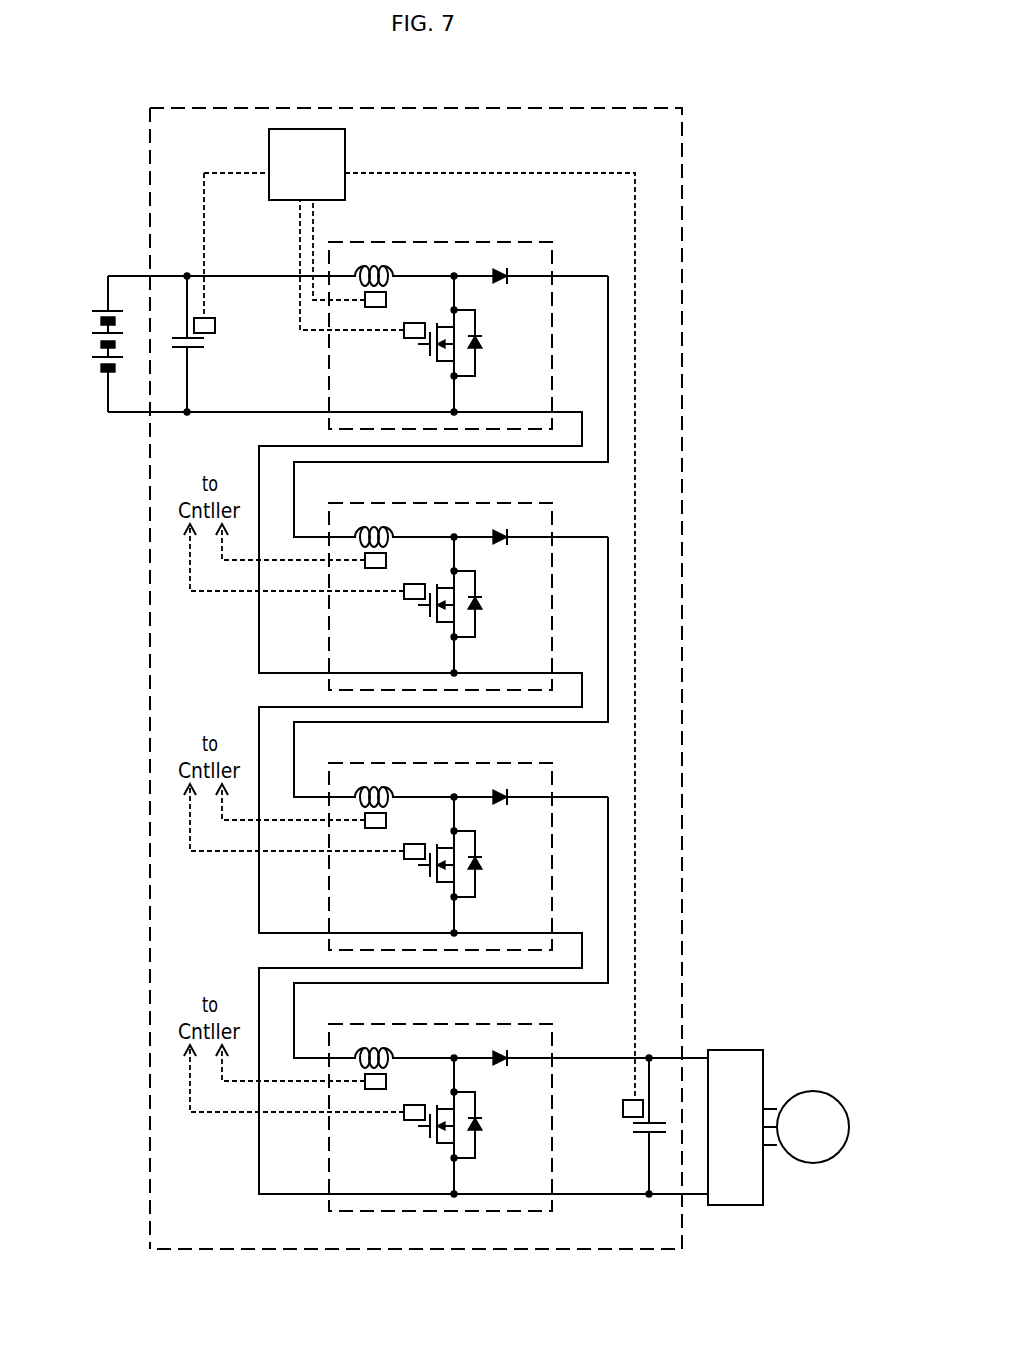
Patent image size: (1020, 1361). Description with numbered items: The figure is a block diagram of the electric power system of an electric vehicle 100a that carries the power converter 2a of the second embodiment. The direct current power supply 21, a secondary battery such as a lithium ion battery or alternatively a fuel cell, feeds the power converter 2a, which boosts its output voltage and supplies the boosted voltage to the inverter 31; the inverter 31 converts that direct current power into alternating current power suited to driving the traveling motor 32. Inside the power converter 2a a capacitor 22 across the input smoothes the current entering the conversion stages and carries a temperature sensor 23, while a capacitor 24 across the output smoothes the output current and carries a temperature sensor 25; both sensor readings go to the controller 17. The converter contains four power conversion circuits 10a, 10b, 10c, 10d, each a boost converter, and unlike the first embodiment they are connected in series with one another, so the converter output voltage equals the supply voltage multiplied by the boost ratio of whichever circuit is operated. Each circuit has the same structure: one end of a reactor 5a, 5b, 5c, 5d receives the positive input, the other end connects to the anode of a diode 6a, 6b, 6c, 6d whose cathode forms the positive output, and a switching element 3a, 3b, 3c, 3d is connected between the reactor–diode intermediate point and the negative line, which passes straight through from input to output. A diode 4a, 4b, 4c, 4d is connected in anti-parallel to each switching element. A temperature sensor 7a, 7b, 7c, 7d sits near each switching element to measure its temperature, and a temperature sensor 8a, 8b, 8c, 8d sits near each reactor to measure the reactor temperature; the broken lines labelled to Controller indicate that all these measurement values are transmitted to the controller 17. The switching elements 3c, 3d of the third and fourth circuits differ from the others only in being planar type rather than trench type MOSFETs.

The electric vehicle 100a is at (126, 107).
The power converter 2a is at (146, 166).
The controller 17 is at (269, 152).
The direct current power supply 21 is at (97, 308).
The capacitor 22 is at (200, 349).
The temperature sensor 23 is at (215, 326).
The power conversion circuit 10a is at (536, 240).
The power conversion circuit 10b is at (477, 585).
The power conversion circuit 10c is at (476, 845).
The power conversion circuit 10d is at (477, 1106).
The reactor 5a is at (366, 264).
The reactor 5b is at (375, 507).
The reactor 5c is at (375, 767).
The reactor 5d is at (375, 1028).
The diode 6a is at (497, 267).
The diode 6b is at (487, 506).
The diode 6c is at (487, 766).
The diode 6d is at (487, 1027).
The temperature sensor 8a is at (386, 299).
The temperature sensor 8b is at (406, 558).
The temperature sensor 8c is at (405, 818).
The temperature sensor 8d is at (406, 1079).
The temperature sensor 7a is at (404, 336).
The temperature sensor 7b is at (387, 606).
The temperature sensor 7c is at (387, 866).
The temperature sensor 7d is at (387, 1127).
The switching element 3a is at (432, 364).
The switching element 3b is at (417, 619).
The switching element 3c is at (417, 879).
The switching element 3d is at (417, 1140).
The diode 4a is at (484, 344).
The diode 4b is at (497, 605).
The diode 4c is at (496, 865).
The diode 4d is at (497, 1126).
The temperature sensor 25 is at (623, 1108).
The capacitor 24 is at (645, 1133).
The inverter 31 is at (735, 1050).
The traveling motor 32 is at (815, 1091).